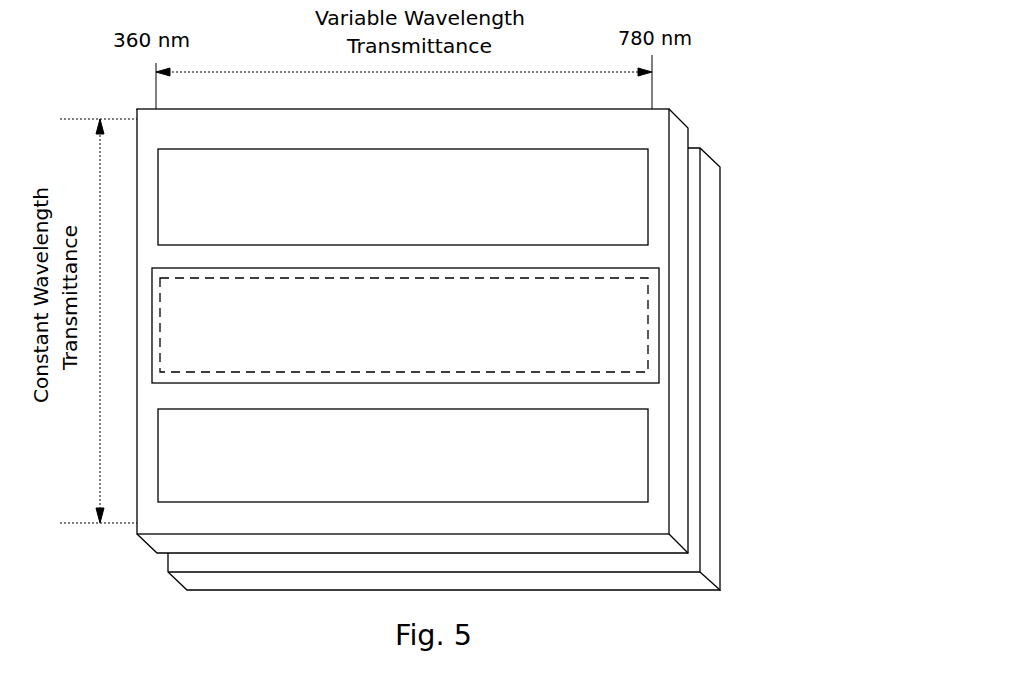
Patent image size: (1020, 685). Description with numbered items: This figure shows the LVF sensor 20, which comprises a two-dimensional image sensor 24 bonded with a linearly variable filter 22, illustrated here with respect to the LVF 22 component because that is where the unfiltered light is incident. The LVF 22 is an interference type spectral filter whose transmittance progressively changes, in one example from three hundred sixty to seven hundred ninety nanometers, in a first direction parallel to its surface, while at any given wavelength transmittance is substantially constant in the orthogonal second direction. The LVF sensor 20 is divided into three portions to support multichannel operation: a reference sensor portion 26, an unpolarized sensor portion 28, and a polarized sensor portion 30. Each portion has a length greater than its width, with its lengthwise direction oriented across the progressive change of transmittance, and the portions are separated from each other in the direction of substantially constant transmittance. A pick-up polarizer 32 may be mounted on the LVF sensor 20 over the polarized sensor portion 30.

The LVF sensor 20 is at (787, 223).
The linearly variable filter 22 is at (683, 120).
The image sensor 24 is at (722, 540).
The reference sensor portion 26 is at (650, 203).
The unpolarized sensor portion 28 is at (648, 440).
The polarized sensor portion 30 is at (650, 305).
The pick-up polarizer 32 is at (656, 364).